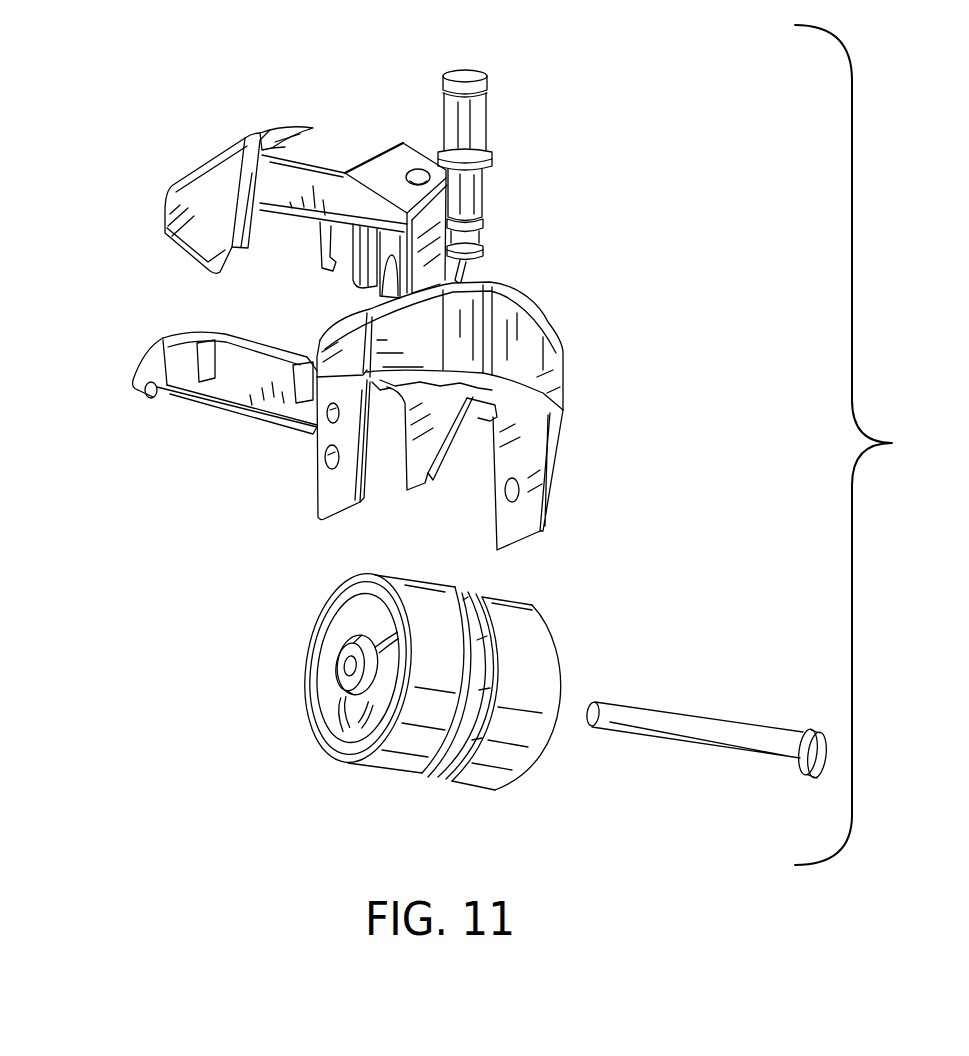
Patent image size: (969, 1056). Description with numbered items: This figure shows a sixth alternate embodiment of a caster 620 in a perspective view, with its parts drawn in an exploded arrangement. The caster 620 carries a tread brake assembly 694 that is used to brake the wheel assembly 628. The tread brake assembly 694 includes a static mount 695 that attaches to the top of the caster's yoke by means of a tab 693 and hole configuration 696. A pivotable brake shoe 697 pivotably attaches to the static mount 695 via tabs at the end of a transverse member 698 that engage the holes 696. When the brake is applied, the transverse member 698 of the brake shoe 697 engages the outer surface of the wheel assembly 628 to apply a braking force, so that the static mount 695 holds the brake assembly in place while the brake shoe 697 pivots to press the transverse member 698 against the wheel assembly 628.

The caster 620 is at (567, 292).
The wheel assembly 628 is at (577, 660).
The tab 693 is at (426, 174).
The tread brake assembly 694 is at (97, 273).
The static mount 695 is at (384, 178).
The hole configuration 696 is at (272, 143).
The pivotable brake shoe 697 is at (247, 342).
The transverse member 698 is at (230, 406).